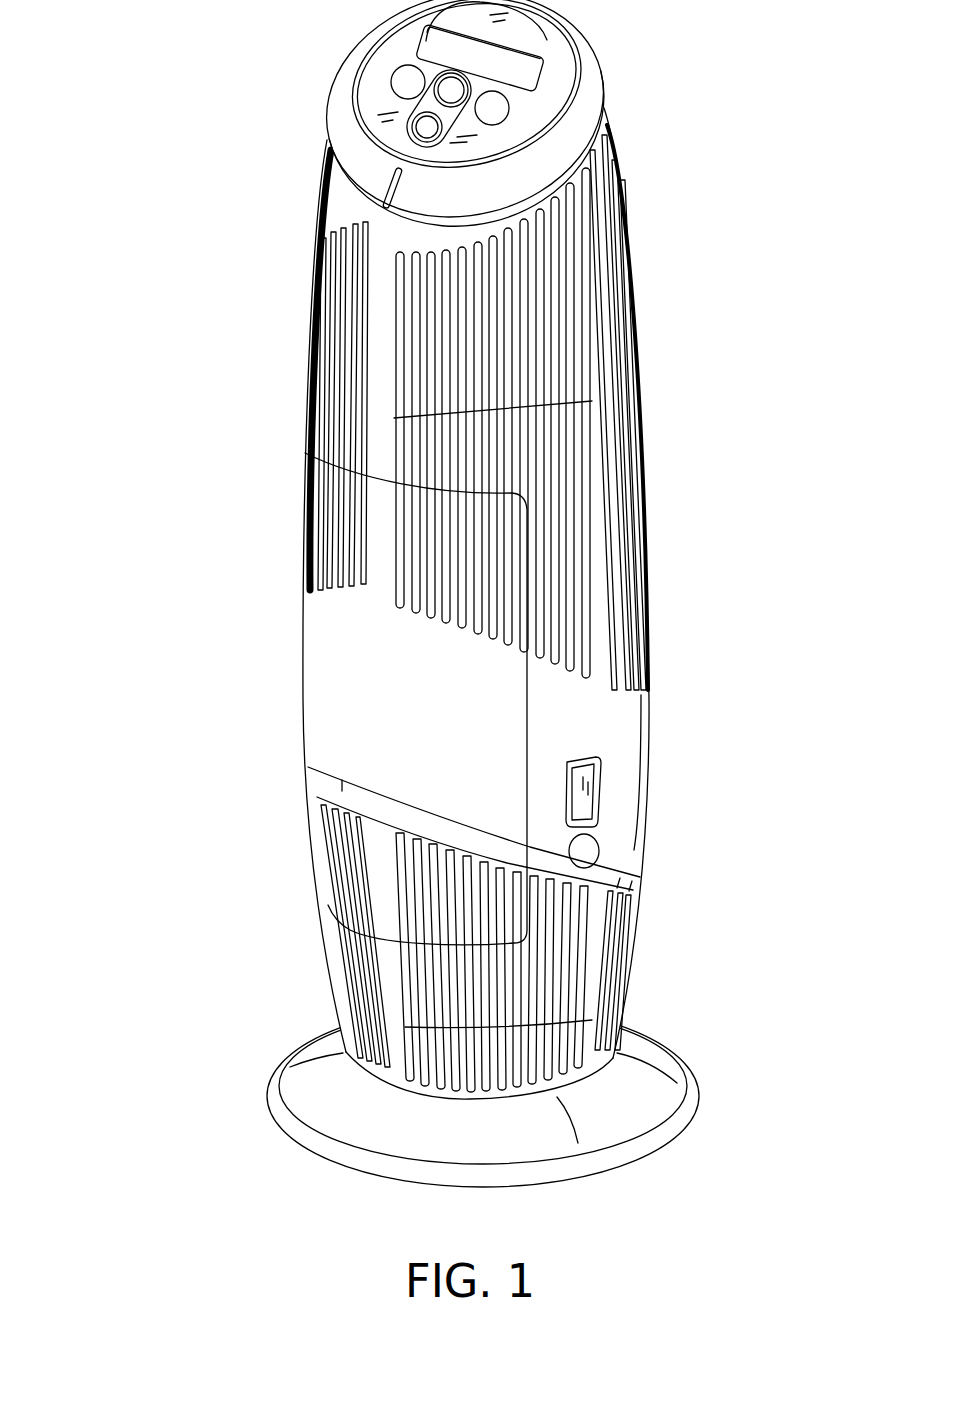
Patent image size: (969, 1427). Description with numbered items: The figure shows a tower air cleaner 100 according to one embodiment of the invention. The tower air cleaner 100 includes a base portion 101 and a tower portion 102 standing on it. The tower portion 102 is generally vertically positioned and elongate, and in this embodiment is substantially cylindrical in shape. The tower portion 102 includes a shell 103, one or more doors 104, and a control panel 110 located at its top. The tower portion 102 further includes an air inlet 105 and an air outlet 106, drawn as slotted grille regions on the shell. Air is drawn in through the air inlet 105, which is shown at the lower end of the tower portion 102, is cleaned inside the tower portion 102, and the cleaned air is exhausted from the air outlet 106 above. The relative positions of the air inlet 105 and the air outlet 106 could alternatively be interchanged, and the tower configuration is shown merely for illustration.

The tower air cleaner 100 is at (188, 1210).
The base portion 101 is at (270, 1090).
The tower portion 102 is at (164, 8).
The shell 103 is at (648, 607).
The door 104 is at (303, 660).
The air inlet 105 is at (715, 873).
The air outlet 106 is at (720, 222).
The control panel 110 is at (560, 38).